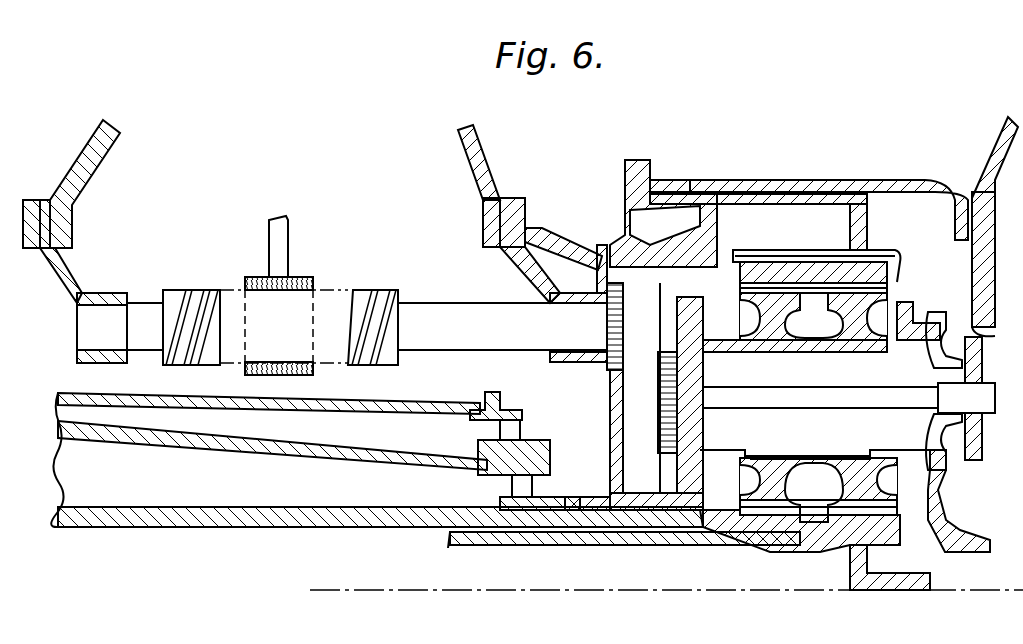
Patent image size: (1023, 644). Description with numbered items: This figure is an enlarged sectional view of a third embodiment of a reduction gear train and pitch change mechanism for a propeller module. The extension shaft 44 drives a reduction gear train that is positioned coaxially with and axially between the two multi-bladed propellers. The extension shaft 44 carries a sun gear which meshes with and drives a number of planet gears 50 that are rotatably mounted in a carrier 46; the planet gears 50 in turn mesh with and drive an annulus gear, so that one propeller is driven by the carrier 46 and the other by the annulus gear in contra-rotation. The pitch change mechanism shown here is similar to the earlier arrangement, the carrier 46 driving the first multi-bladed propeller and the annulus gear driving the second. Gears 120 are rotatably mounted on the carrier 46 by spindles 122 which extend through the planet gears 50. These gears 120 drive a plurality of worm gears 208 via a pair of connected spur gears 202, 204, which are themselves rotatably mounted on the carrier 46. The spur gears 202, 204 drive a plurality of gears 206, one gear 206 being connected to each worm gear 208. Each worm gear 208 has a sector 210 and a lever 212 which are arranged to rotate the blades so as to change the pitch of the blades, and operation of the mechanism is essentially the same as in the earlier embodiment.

The extension shaft 44 is at (513, 543).
The carrier 46 is at (293, 527).
The planet gears 50 is at (773, 472).
The gears 120 is at (677, 402).
The spindles 122 is at (845, 372).
The spur gear 202 is at (630, 460).
The spur gear 204 is at (610, 372).
The gear 206 is at (590, 282).
The worm gear 208 is at (400, 290).
The sector 210 is at (313, 277).
The lever 212 is at (290, 240).